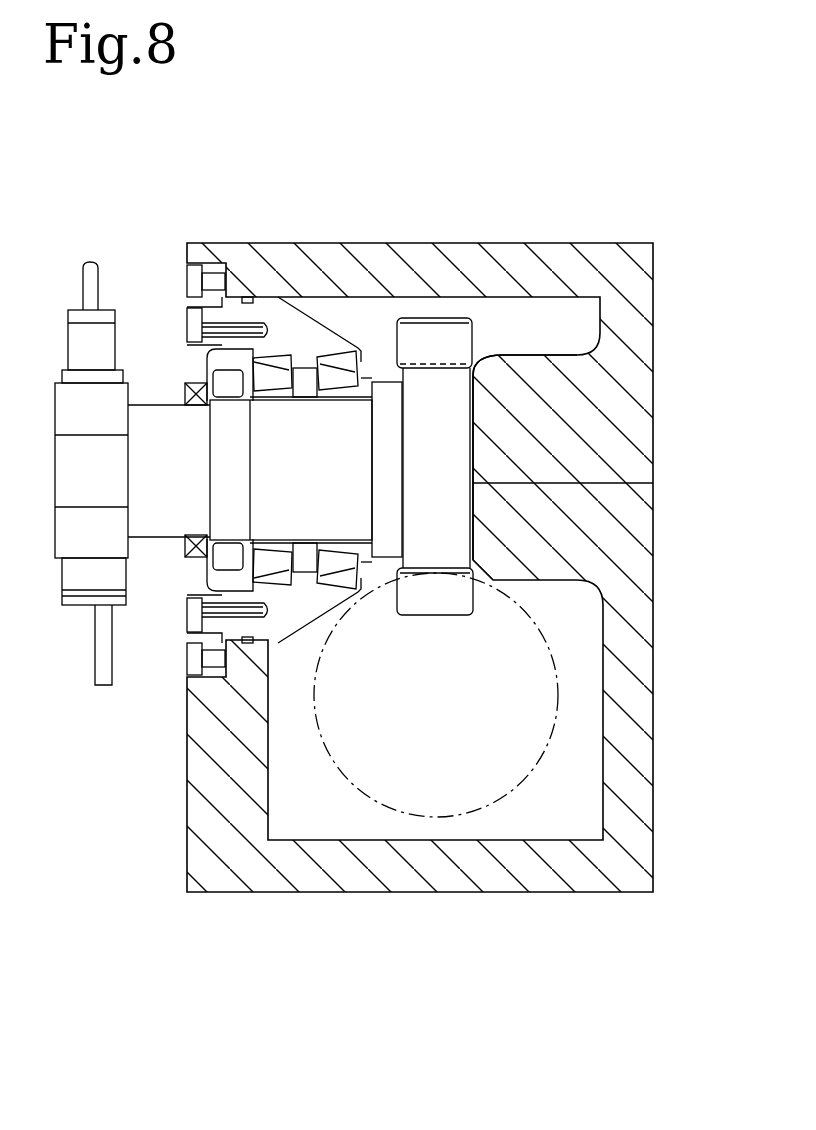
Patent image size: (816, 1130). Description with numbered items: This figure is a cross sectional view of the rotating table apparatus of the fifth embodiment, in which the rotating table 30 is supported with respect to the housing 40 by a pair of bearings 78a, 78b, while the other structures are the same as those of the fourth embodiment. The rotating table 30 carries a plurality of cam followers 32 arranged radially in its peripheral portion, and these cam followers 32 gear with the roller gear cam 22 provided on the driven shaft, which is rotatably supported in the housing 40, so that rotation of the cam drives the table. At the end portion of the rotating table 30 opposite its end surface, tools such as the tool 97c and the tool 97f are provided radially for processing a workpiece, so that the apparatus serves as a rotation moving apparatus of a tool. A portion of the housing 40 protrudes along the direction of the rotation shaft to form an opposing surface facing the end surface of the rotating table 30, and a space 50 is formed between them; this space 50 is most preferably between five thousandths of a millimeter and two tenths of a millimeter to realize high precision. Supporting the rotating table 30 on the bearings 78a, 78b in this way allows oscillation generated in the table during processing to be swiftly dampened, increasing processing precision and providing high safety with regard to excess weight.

The roller gear cam 22 is at (417, 803).
The rotating table 30 is at (62, 540).
The cam follower 32 is at (437, 333).
The housing 40 is at (640, 384).
The space 50 is at (655, 483).
The bearing 78a is at (278, 370).
The bearing 78b is at (333, 363).
The tool 97c is at (90, 260).
The tool 97f is at (100, 678).